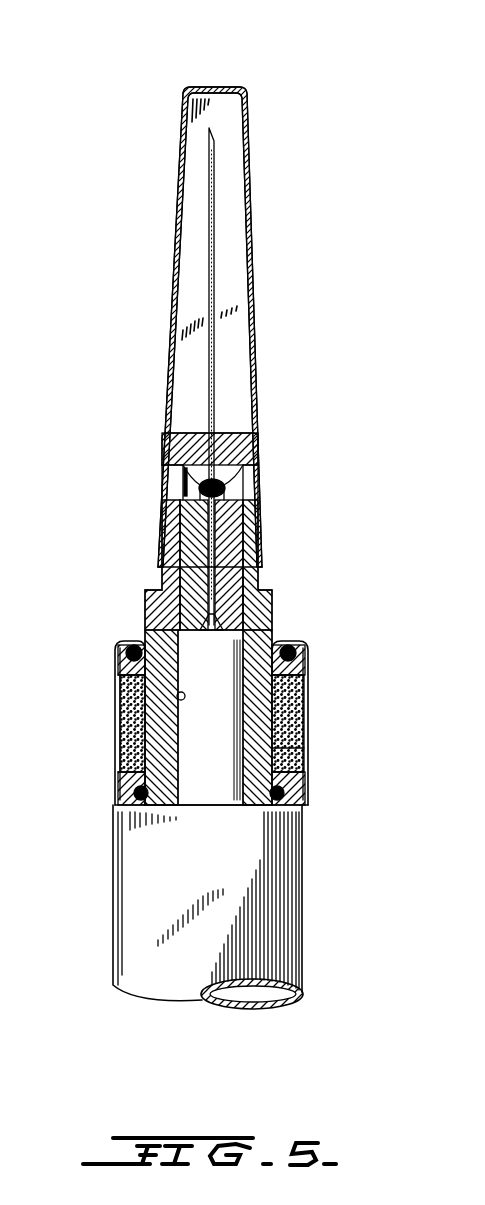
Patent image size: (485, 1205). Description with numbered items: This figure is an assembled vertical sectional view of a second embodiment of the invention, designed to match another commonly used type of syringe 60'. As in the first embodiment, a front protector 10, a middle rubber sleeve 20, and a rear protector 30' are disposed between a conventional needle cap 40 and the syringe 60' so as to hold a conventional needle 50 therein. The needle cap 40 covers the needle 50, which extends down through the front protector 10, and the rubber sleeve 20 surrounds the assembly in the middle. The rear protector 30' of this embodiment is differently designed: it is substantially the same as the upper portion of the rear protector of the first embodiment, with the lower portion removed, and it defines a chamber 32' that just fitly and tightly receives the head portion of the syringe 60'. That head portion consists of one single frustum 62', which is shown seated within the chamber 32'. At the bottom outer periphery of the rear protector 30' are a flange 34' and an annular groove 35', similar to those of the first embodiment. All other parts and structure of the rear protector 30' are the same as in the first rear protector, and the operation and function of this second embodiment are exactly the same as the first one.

The front protector 10 is at (280, 600).
The middle rubber sleeve 20 is at (309, 732).
The rear protector 30' is at (323, 723).
The chamber 32' is at (119, 686).
The flange 34' is at (319, 769).
The annular groove 35' is at (254, 794).
The needle cap 40 is at (257, 383).
The needle 50 is at (215, 290).
The syringe 60' is at (242, 907).
The frustum 62' is at (112, 723).